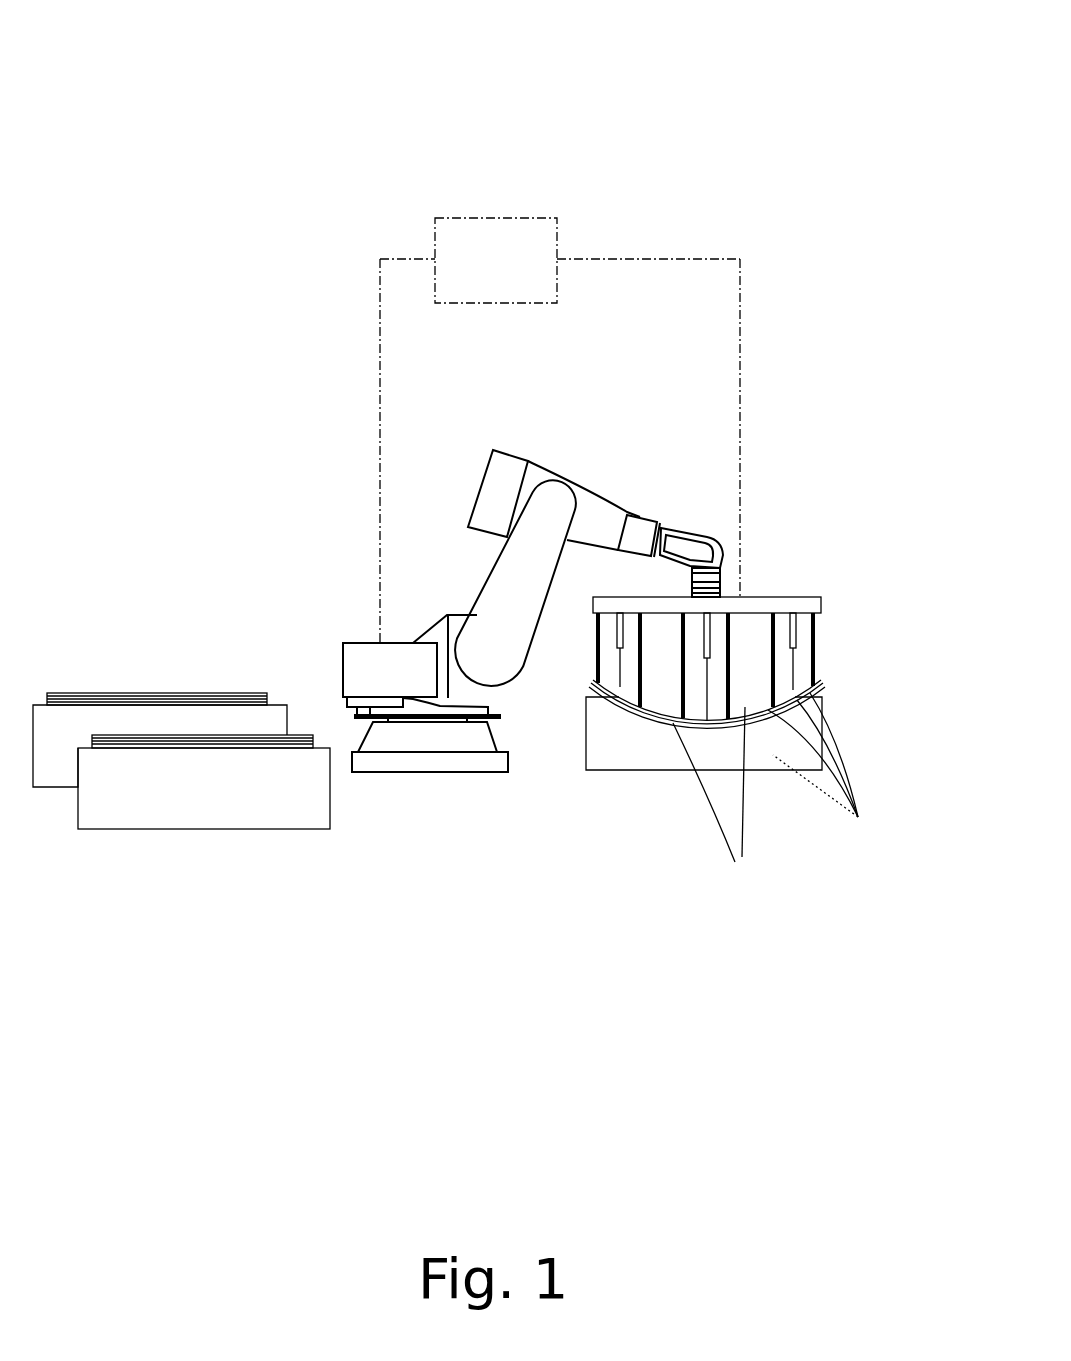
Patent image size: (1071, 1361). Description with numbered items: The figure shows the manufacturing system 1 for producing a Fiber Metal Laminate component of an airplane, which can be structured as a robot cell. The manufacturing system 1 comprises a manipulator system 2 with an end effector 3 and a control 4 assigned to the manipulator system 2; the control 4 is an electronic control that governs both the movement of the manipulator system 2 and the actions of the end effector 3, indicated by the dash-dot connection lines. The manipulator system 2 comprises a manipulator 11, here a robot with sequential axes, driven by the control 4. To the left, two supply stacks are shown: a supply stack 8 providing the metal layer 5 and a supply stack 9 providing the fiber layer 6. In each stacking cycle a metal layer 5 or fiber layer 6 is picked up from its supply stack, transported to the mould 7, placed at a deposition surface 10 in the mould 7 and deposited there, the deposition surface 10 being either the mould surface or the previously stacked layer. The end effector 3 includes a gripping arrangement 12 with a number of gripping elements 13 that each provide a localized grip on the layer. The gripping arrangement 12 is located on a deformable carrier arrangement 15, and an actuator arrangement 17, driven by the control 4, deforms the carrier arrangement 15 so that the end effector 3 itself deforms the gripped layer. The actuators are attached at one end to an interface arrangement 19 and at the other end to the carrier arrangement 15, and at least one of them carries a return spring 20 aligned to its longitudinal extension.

The manufacturing system 1 is at (177, 137).
The manipulator system 2 is at (383, 215).
The end effector 3 is at (848, 538).
The control 4 is at (507, 238).
The metal layer 5 is at (307, 735).
The fiber layer 6 is at (102, 693).
The mould 7 is at (595, 742).
The supply stack 8 is at (218, 803).
The supply stack 9 is at (48, 768).
The deposition surface 10 is at (635, 712).
The manipulator 11 is at (402, 588).
The gripping arrangement 12 is at (812, 688).
The gripping elements 13 is at (801, 802).
The deformable carrier arrangement 15 is at (823, 677).
The actuator arrangement 17 is at (848, 632).
The interface arrangement 19 is at (782, 605).
The return spring 20 is at (597, 643).